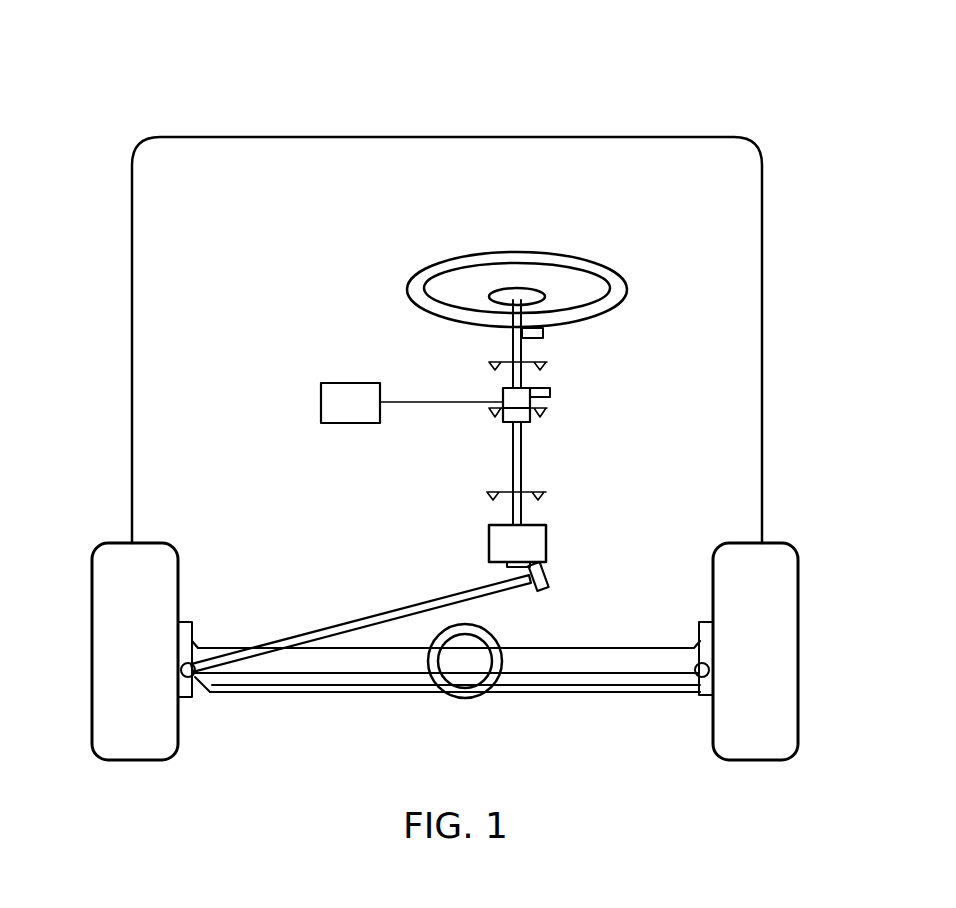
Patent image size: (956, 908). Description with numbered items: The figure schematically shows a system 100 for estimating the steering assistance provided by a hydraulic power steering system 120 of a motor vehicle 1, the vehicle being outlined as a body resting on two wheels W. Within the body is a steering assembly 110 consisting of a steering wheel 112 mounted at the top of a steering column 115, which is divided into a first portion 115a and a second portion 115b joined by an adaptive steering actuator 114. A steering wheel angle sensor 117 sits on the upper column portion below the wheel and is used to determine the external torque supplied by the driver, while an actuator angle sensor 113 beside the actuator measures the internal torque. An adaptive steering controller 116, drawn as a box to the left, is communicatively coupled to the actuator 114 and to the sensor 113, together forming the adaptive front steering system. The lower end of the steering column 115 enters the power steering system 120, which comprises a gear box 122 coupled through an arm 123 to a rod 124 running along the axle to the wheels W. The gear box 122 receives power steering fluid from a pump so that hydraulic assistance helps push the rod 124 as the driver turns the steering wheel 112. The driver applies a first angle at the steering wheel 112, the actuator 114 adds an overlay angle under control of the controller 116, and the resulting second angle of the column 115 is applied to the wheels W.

The system 100 is at (152, 86).
The motor vehicle 1 is at (762, 218).
The wheels W is at (92, 580).
The steering assembly 110 is at (651, 308).
The steering wheel 112 is at (437, 268).
The steering column 115 is at (490, 390).
The first portion of steering column 115a is at (522, 374).
The second portion of steering column 115b is at (522, 452).
The steering wheel angle sensor 117 is at (543, 333).
The adaptive steering actuator 114 is at (508, 420).
The actuator angle sensor 113 is at (550, 393).
The adaptive steering controller 116 is at (366, 414).
The hydraulic power steering system 120 is at (403, 550).
The gear box 122 is at (546, 538).
The arm 123 is at (549, 567).
The rod 124 is at (383, 615).